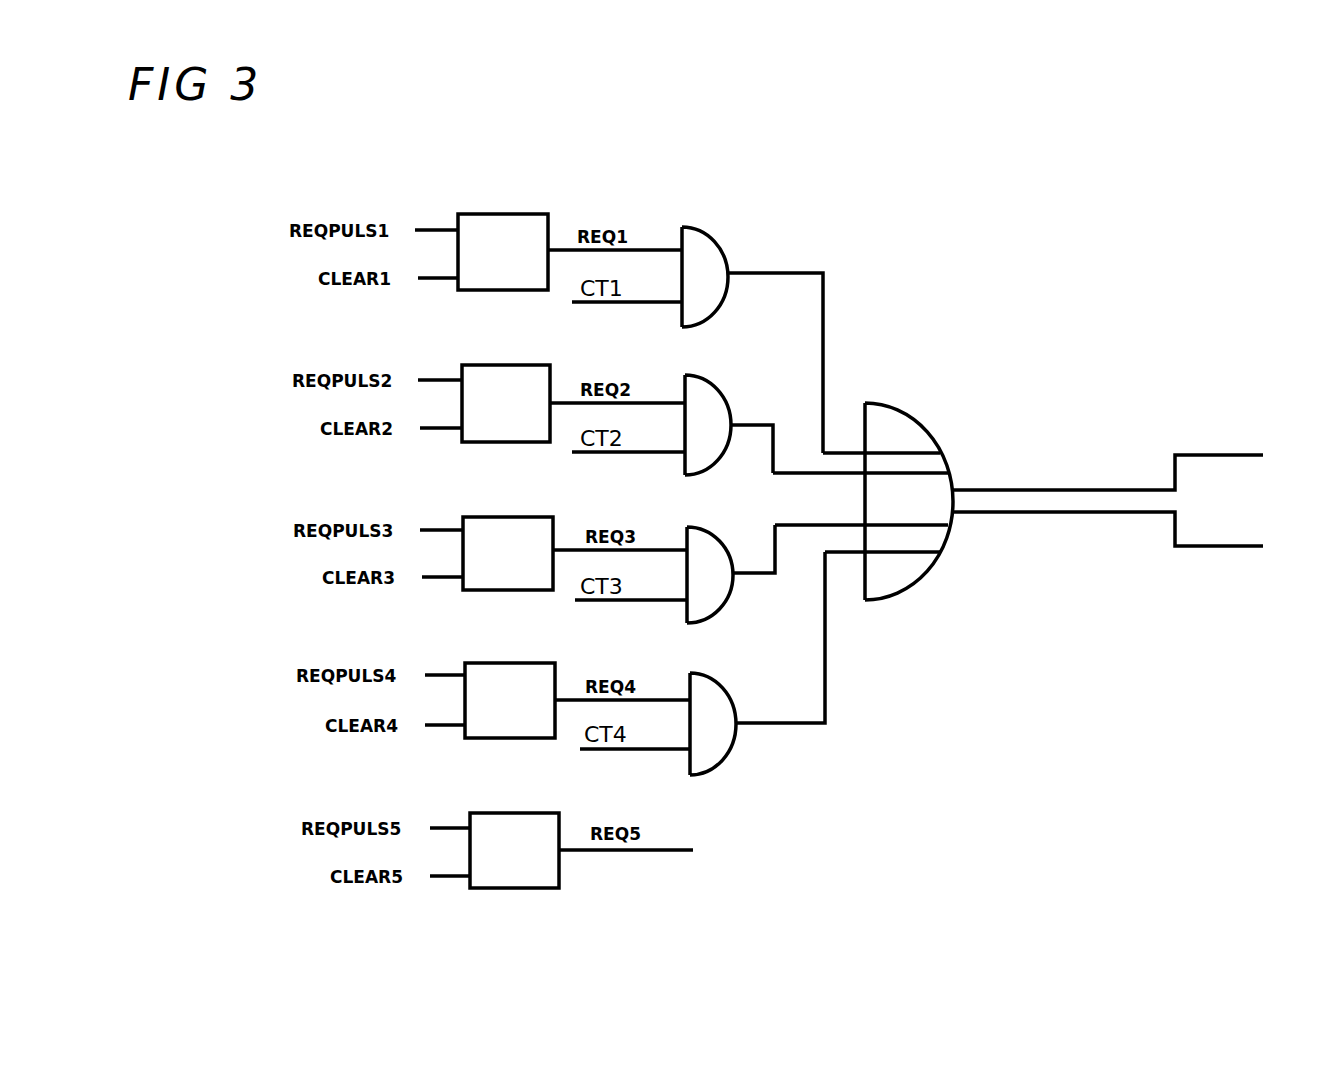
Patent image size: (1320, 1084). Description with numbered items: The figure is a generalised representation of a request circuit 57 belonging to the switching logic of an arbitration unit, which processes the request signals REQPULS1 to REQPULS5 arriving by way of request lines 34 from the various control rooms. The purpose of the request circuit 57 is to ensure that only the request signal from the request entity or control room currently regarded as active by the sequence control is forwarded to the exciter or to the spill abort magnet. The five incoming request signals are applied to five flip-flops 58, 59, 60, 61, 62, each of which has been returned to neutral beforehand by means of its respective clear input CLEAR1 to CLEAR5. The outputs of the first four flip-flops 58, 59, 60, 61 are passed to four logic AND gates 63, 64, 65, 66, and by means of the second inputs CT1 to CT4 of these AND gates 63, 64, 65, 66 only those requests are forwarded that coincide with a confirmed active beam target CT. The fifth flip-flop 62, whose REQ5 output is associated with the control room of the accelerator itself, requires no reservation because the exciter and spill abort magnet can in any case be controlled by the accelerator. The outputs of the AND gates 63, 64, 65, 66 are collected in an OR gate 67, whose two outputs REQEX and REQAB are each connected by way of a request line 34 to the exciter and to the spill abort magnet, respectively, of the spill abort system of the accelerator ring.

The request line 34 is at (436, 228).
The request circuit 57 is at (1147, 202).
The flip-flop 58 is at (506, 291).
The flip-flop 59 is at (506, 443).
The flip-flop 60 is at (510, 591).
The flip-flop 61 is at (512, 739).
The flip-flop 62 is at (518, 889).
The AND gate 63 is at (722, 305).
The AND gate 64 is at (724, 455).
The AND gate 65 is at (726, 603).
The AND gate 66 is at (728, 755).
The OR gate 67 is at (928, 575).